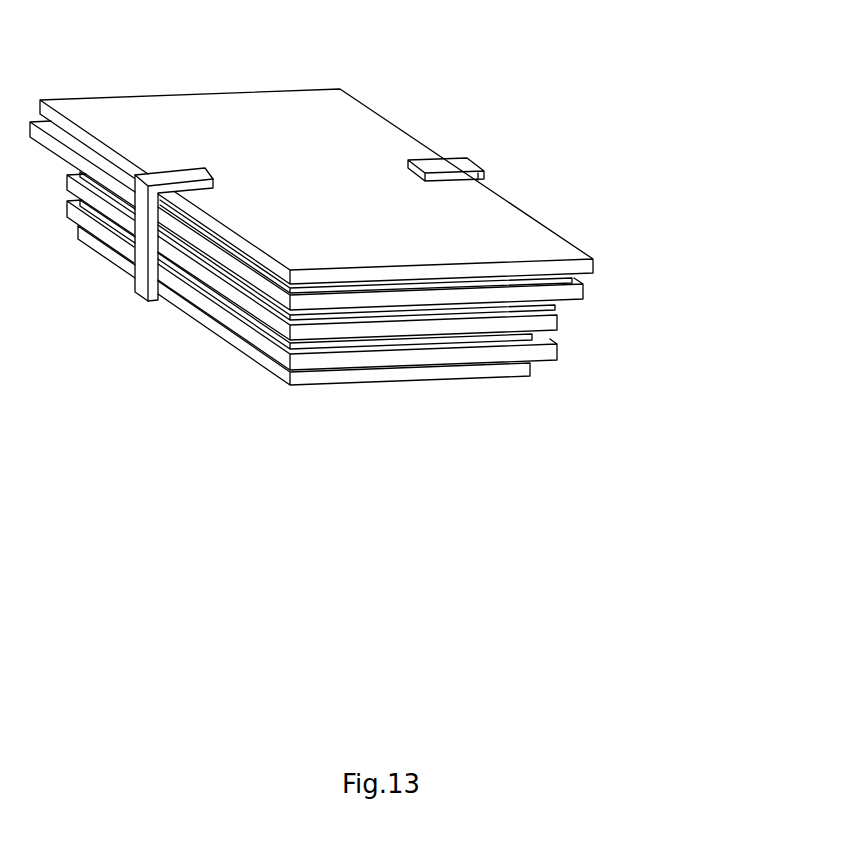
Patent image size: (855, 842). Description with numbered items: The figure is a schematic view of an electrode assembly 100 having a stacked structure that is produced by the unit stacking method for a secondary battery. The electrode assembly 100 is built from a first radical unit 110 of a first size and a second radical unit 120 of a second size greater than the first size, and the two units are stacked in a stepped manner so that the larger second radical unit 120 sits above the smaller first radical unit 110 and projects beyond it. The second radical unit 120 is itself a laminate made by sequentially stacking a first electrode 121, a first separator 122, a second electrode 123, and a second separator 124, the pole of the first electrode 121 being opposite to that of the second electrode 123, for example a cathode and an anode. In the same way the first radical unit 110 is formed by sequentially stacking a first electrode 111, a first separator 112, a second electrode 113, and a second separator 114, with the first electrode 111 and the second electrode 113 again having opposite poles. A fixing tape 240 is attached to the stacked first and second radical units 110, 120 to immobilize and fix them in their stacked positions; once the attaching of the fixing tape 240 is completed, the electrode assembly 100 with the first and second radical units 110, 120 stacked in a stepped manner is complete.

The electrode assembly 100 is at (524, 156).
The fixing tape 240 is at (450, 160).
The second radical unit 120 is at (670, 183).
The second separator 124 is at (578, 253).
The second electrode 123 is at (573, 281).
The first separator 122 is at (583, 300).
The first electrode 121 is at (555, 317).
The first radical unit 110 is at (670, 345).
The second separator 114 is at (558, 322).
The second electrode 113 is at (535, 334).
The first separator 112 is at (556, 353).
The first electrode 111 is at (532, 370).